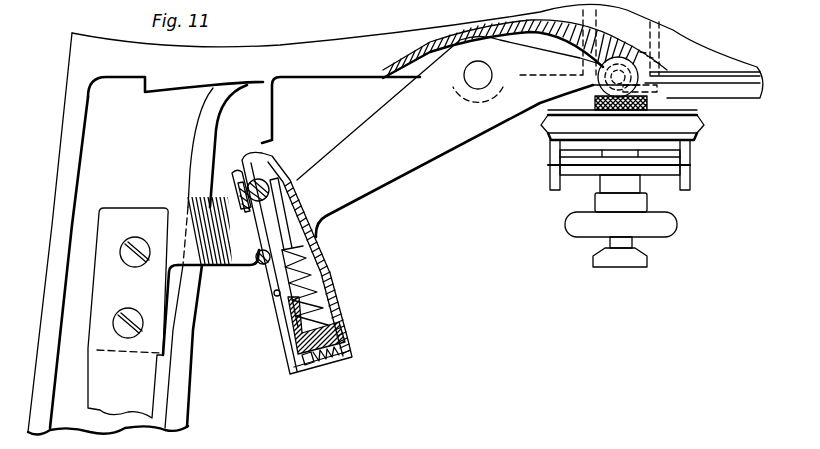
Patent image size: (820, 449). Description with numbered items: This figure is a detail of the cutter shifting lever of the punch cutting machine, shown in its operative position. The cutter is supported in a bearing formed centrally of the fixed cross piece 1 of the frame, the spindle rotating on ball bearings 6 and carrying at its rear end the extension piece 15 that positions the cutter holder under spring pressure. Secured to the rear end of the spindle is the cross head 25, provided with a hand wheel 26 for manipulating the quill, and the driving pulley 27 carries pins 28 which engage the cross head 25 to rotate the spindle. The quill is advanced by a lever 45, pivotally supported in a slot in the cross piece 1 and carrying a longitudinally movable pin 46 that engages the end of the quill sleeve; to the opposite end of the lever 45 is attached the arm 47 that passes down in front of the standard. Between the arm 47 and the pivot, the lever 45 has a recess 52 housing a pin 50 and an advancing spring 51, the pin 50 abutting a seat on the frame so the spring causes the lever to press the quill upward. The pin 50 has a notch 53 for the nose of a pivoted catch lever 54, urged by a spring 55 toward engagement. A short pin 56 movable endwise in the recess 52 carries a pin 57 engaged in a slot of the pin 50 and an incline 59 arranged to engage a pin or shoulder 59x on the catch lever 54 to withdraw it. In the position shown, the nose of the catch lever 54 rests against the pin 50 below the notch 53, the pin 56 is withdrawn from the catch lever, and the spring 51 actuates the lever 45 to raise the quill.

The cross piece 1 is at (712, 44).
The ball bearings 6 is at (592, 110).
The extension piece 15 is at (623, 236).
The cross head 25 is at (662, 170).
The hand wheel 26 is at (670, 227).
The driving pulley 27 is at (698, 125).
The pins 28 is at (692, 182).
The lever 45 is at (403, 170).
The pin 46 is at (623, 72).
The arm 47 is at (144, 391).
The pin 50 is at (341, 121).
The spring 51 is at (321, 274).
The recess 52 is at (343, 333).
The notch 53 is at (262, 235).
The catch lever 54 is at (282, 308).
The spring 55 is at (331, 364).
The short pin 56 is at (232, 177).
The pin 57 is at (233, 200).
The incline 59 is at (270, 183).
The pin or shoulder 59x is at (265, 268).